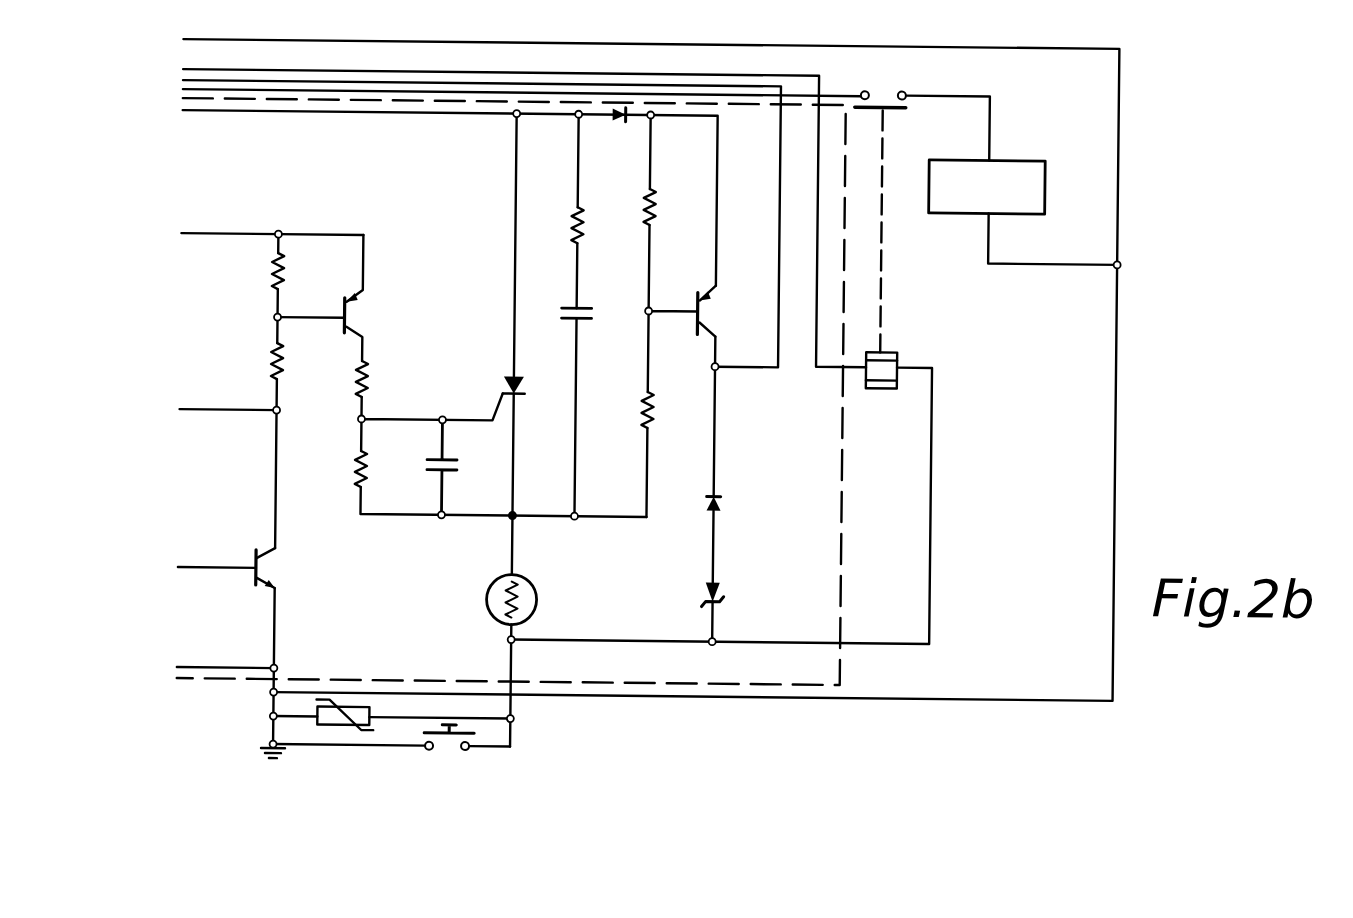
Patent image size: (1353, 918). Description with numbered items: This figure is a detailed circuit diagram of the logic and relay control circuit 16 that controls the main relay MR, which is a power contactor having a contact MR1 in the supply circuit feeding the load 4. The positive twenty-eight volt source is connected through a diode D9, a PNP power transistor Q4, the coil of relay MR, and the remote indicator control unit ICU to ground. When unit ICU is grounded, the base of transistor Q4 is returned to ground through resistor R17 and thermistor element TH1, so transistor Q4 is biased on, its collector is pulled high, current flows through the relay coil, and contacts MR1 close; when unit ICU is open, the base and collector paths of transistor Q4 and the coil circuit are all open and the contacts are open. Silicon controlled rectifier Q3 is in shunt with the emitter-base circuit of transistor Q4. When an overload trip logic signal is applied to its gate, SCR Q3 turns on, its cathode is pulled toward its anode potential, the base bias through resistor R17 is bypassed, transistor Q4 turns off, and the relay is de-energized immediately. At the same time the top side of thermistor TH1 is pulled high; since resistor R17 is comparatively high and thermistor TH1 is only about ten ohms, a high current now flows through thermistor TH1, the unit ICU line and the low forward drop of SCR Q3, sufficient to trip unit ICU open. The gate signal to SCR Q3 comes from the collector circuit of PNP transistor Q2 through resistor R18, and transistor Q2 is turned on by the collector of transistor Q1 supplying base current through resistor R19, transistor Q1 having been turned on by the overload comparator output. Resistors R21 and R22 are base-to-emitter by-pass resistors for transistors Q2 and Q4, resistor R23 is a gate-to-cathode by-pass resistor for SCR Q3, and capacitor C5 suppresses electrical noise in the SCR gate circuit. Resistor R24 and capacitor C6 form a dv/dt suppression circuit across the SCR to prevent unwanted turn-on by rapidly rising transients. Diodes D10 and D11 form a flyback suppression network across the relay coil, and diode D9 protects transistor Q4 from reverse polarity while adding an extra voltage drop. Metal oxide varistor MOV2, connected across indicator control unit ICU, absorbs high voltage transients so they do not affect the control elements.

The base-to-emitter by-pass resistor R21 is at (288, 266).
The resistor R19 is at (284, 367).
The resistor R18 is at (370, 382).
The gate-to-cathode by-pass resistor R23 is at (369, 471).
The resistor R24 is at (574, 222).
The base-to-emitter by-pass resistor R22 is at (647, 207).
The resistor R17 is at (656, 406).
The electrical noise suppressing capacitor C5 is at (460, 466).
The capacitor C6 is at (566, 316).
The transistor Q1 is at (278, 572).
The PNP transistor Q2 is at (356, 316).
The silicon controlled rectifier Q3 is at (503, 386).
The PNP power transistor Q4 is at (703, 316).
The diode D9 is at (626, 119).
The diode D10 is at (722, 504).
The diode D11 is at (724, 585).
The thermistor element TH1 is at (539, 593).
The metal oxide varistor MOV2 is at (374, 710).
The indicator control unit ICU is at (470, 754).
The relay contact MR1 is at (885, 92).
The main relay MR is at (902, 358).
The load 4 is at (1025, 159).
The logic and relay control circuit 16 is at (441, 257).